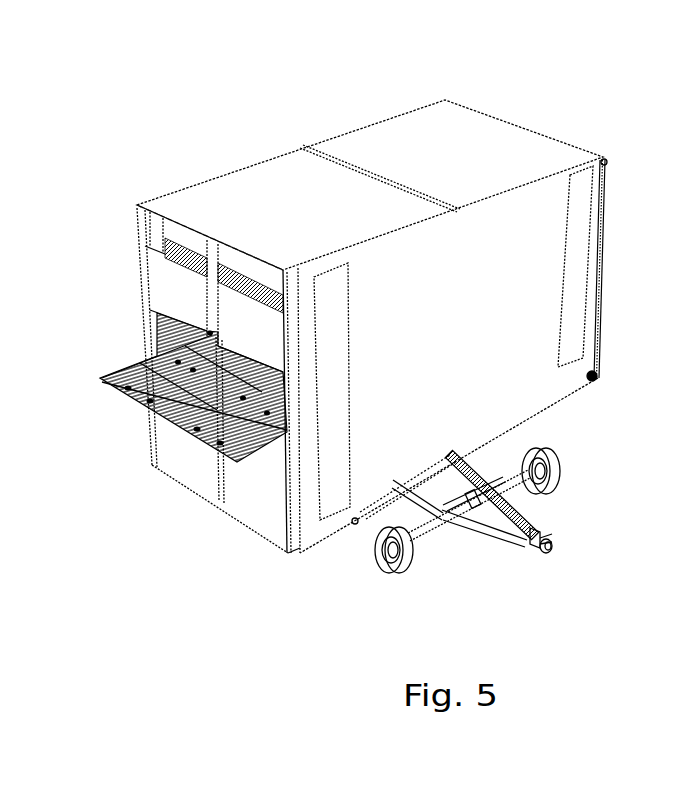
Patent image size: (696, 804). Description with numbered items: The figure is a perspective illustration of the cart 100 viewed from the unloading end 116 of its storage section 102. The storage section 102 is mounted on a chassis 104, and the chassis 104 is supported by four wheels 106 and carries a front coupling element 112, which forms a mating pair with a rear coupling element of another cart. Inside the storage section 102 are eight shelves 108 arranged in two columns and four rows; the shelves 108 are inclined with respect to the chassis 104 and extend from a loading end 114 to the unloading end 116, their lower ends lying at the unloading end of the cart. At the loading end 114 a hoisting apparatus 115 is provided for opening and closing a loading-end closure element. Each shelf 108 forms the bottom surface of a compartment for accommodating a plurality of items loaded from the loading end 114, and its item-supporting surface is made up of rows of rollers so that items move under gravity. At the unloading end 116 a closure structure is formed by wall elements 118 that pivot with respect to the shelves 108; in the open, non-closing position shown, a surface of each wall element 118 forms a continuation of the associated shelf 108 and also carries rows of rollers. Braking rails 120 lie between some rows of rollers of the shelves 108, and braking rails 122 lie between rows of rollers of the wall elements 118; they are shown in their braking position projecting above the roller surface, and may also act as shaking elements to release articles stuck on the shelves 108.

The cart 100 is at (358, 80).
The storage section 102 is at (515, 308).
The chassis 104 is at (480, 462).
The wheels 106 is at (553, 470).
The shelves 108 is at (277, 392).
The front coupling element 112 is at (541, 552).
The loading end 114 is at (623, 173).
The hoisting apparatus 115 is at (602, 257).
The unloading end 116 is at (124, 237).
The wall elements 118 is at (160, 282).
The braking rails 120 is at (200, 372).
The braking rails 122 is at (132, 387).